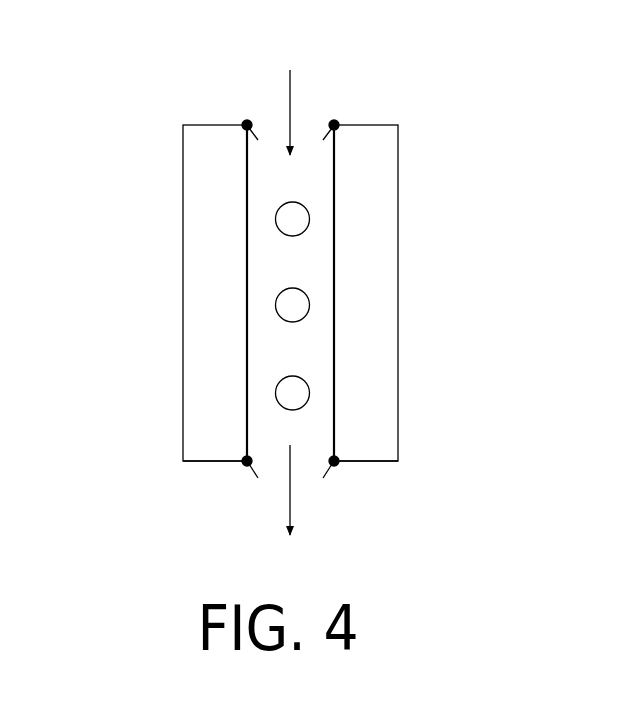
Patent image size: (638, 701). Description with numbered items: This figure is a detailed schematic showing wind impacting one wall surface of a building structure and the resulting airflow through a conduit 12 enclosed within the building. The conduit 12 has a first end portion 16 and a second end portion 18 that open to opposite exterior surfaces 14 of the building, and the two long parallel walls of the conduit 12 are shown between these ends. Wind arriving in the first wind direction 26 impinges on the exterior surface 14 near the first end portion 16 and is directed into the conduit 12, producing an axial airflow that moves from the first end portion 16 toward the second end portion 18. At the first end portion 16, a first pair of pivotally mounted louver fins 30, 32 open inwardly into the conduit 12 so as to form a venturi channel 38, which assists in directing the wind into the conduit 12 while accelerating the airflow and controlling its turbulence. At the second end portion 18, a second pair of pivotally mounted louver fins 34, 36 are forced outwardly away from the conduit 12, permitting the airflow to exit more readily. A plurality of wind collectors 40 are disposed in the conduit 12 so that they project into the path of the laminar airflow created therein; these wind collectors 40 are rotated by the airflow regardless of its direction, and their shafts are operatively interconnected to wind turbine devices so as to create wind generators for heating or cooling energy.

The conduit 12 is at (238, 231).
The exterior surface 14 is at (203, 462).
The first end portion 16 is at (320, 117).
The second end portion 18 is at (320, 512).
The first wind direction 26 is at (291, 102).
The louver fin 30 is at (246, 143).
The louver fin 32 is at (333, 136).
The louver fin 34 is at (256, 475).
The louver fin 36 is at (329, 470).
The venturi channel 38 is at (275, 135).
The wind collector 40 is at (276, 391).